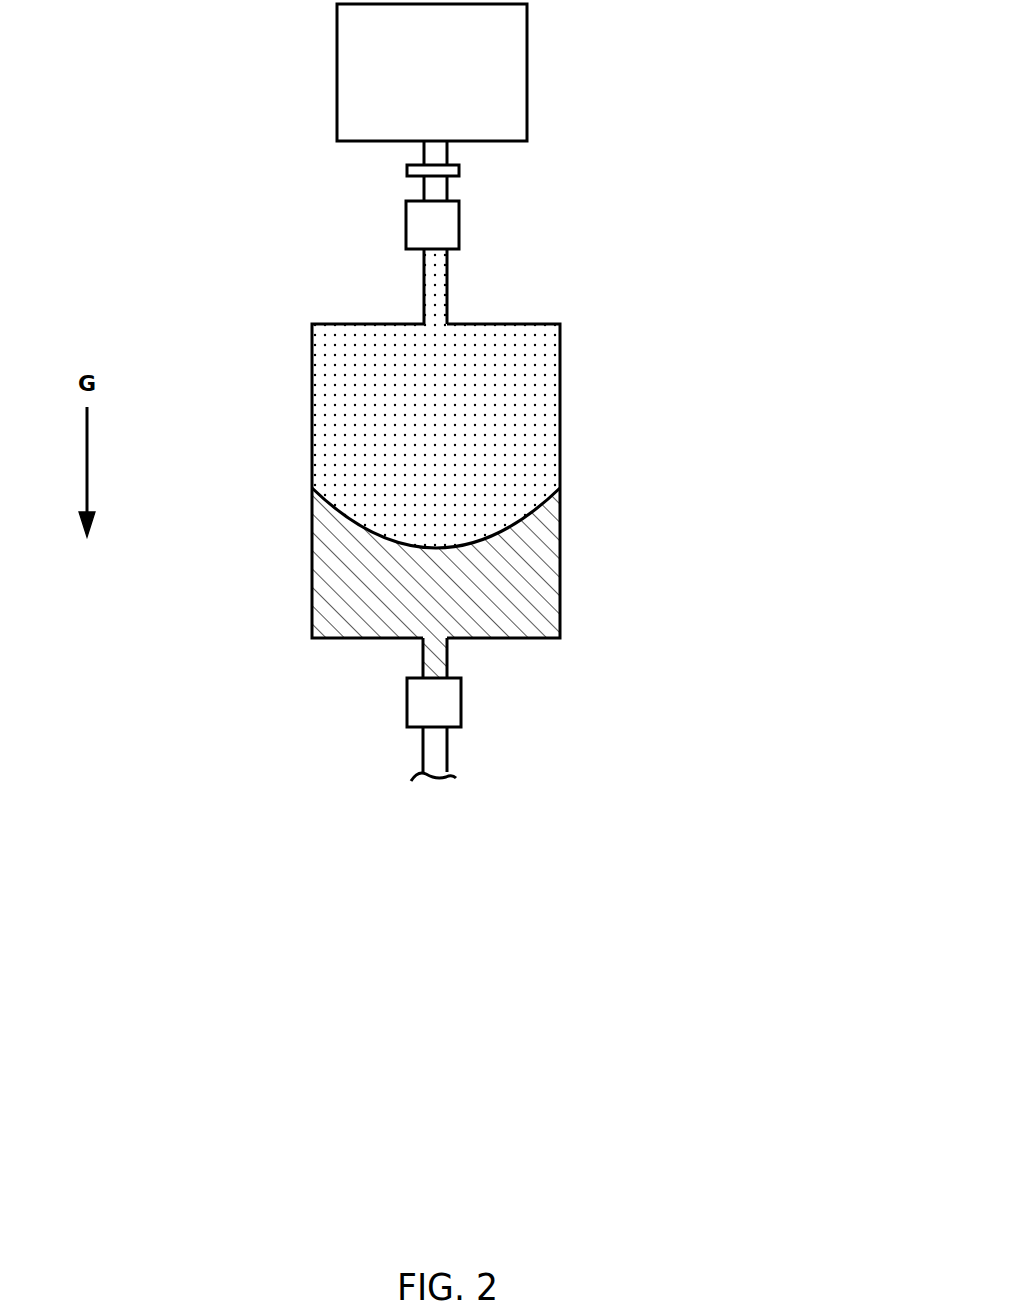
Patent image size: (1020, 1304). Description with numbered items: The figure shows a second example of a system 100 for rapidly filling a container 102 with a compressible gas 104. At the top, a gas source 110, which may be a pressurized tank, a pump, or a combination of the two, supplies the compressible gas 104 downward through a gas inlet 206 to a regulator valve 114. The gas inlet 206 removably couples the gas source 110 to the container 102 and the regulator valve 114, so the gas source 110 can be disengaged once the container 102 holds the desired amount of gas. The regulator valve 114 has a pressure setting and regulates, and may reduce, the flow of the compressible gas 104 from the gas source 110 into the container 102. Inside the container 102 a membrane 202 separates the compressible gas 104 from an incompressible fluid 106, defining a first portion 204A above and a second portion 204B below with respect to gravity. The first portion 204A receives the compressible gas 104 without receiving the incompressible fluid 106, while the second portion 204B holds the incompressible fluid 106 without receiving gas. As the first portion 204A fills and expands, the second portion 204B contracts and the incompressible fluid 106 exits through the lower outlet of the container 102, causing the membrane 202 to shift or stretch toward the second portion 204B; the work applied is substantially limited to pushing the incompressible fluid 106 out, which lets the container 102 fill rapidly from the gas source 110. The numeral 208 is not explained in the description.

The system 100 is at (650, 962).
The container 102 is at (481, 481).
The compressible gas 104 is at (430, 276).
The incompressible fluid 106 is at (428, 652).
The gas source 110 is at (336, 18).
The regulator valve 114 is at (407, 225).
The membrane 202 is at (558, 501).
The first portion 204A is at (555, 371).
The second portion 204B is at (552, 621).
The gas inlet 206 is at (407, 172).
The orifice 208 is at (447, 191).